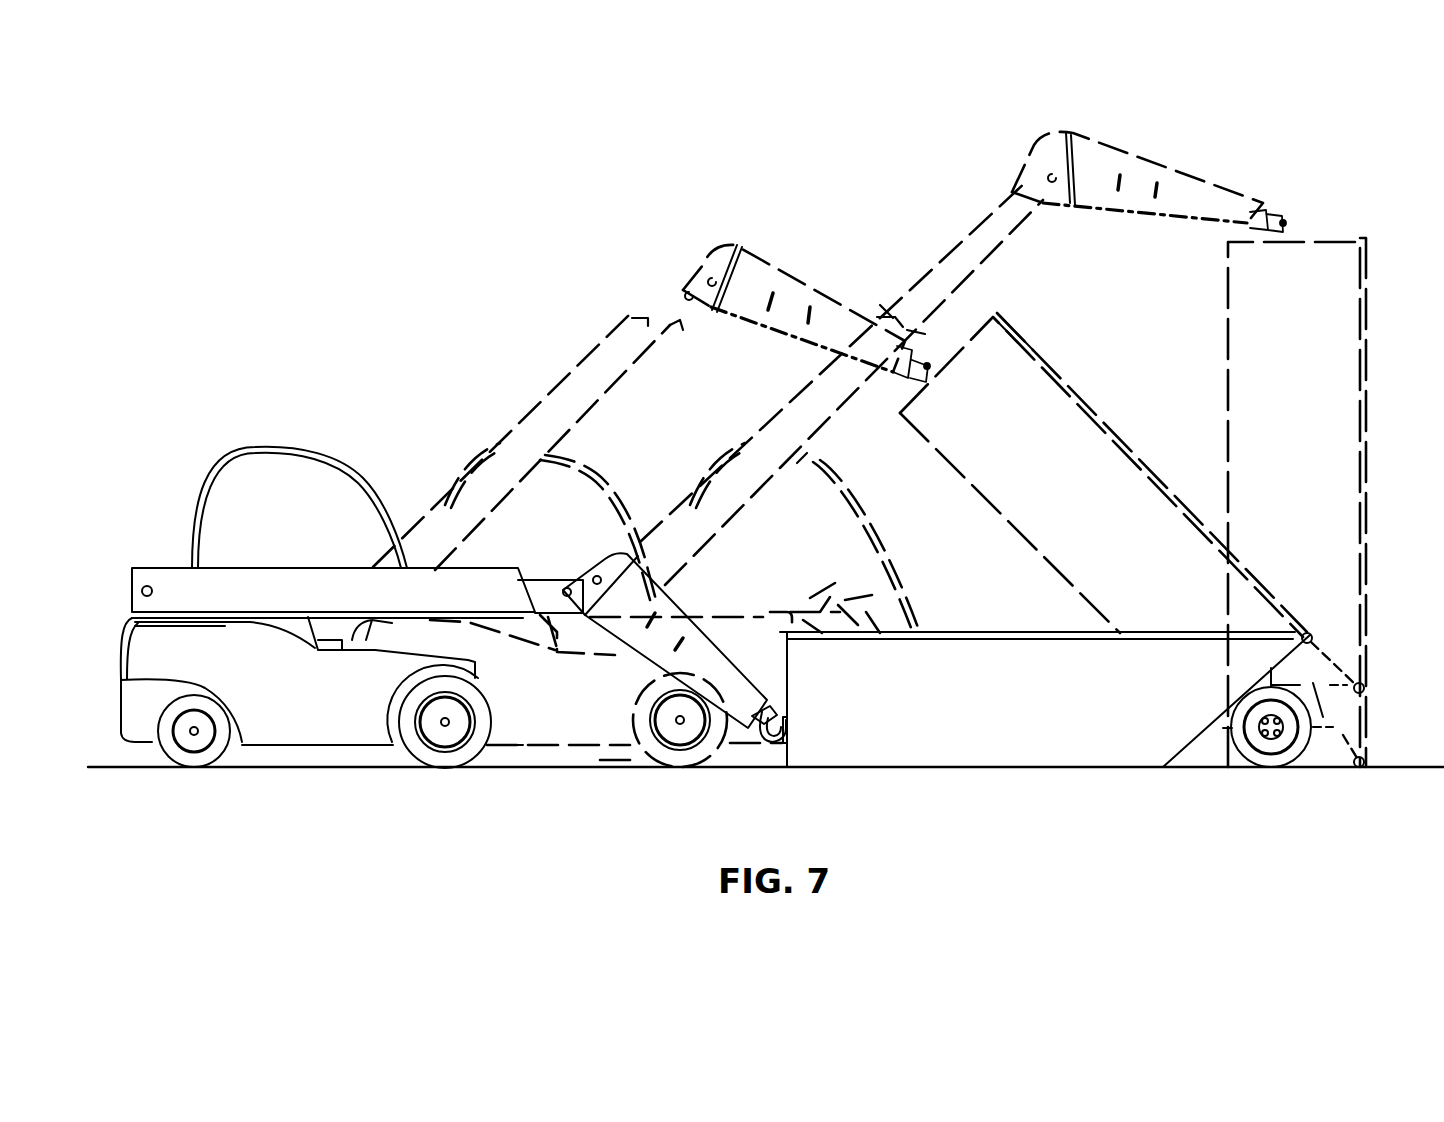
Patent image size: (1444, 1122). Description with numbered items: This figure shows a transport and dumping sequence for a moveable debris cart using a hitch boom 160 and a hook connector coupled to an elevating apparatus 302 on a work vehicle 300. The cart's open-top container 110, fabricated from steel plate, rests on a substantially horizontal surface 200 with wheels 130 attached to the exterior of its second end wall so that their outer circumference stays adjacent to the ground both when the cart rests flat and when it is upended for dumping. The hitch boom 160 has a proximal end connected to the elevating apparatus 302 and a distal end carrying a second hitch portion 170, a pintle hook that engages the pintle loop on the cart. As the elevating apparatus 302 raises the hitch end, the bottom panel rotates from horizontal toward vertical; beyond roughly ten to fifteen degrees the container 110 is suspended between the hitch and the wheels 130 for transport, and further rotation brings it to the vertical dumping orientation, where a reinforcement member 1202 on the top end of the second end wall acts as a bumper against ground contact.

The open-top container 110 is at (1046, 708).
The wheels 130 is at (1235, 767).
The hitch boom 160 is at (715, 637).
The second hitch portion 170 is at (755, 748).
The substantially horizontal surface 200 is at (603, 765).
The work vehicle 300 is at (326, 448).
The elevating apparatus 302 is at (640, 308).
The reinforcement member 1202 is at (1311, 634).